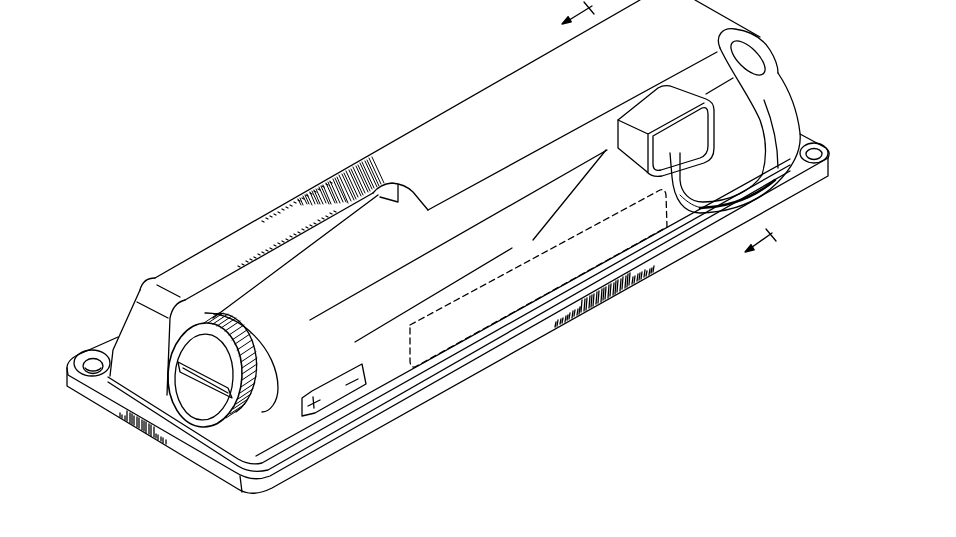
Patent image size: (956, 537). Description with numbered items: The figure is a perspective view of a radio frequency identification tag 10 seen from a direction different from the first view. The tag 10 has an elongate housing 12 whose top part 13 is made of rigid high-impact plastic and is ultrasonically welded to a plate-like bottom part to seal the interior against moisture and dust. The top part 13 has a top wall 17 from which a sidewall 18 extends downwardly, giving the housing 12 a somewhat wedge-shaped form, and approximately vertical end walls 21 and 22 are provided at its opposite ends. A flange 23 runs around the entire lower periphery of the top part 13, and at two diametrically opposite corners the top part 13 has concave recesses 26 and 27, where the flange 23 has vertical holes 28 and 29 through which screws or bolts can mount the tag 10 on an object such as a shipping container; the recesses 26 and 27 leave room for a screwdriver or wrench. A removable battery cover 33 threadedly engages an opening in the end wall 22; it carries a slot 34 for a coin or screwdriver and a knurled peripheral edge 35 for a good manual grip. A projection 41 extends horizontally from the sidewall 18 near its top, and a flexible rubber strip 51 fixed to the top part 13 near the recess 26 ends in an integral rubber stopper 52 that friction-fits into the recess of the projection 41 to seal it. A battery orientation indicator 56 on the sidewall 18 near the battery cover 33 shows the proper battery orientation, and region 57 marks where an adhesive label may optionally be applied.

The radio frequency identification (RFID) tag 10 is at (357, 95).
The elongate housing 12 is at (304, 186).
The top part 13 is at (476, 108).
The top wall 17 is at (655, 40).
The sidewall 18 is at (390, 375).
The end wall 21 is at (770, 43).
The end wall 22 is at (137, 381).
The flange 23 is at (497, 357).
The concave recess 26 is at (754, 60).
The concave recess 27 is at (118, 337).
The vertical hole 28 is at (808, 142).
The vertical hole 29 is at (96, 364).
The battery cover 33 is at (197, 400).
The slot 34 is at (218, 392).
The knurled peripheral edge 35 is at (252, 382).
The projection 41 is at (650, 100).
The flexible rubber strip 51 is at (767, 180).
The rubber stopper 52 is at (705, 137).
The battery orientation indicator 56 is at (332, 396).
The adhesive label region 57 is at (533, 256).